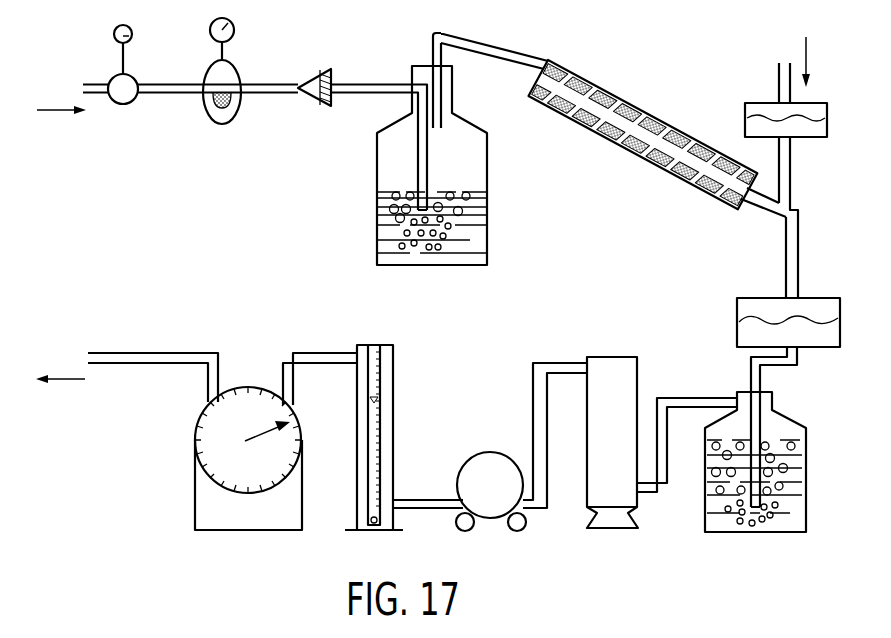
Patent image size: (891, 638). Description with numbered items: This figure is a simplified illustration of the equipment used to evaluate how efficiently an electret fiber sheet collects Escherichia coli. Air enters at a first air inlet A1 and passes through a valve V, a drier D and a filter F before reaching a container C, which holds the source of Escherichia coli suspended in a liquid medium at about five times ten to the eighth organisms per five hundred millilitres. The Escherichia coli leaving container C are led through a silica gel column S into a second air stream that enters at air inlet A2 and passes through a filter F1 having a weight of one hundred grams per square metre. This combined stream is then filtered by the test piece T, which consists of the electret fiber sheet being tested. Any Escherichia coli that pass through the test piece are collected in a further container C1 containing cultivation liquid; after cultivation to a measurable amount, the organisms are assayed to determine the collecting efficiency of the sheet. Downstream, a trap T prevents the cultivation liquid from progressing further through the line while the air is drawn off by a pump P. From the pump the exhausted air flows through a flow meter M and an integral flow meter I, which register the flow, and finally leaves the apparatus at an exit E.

The air inlet A1 is at (72, 82).
The valve V is at (123, 64).
The drier D is at (212, 110).
The filter F is at (313, 98).
The container C is at (377, 214).
The silica gel column S is at (637, 110).
The air inlet A2 is at (785, 65).
The filter F1 is at (820, 115).
The test piece T is at (835, 310).
The container C1 is at (806, 445).
The pump P is at (465, 465).
The flow meter M is at (393, 372).
The integral flow meter I is at (193, 432).
The exit E is at (127, 367).